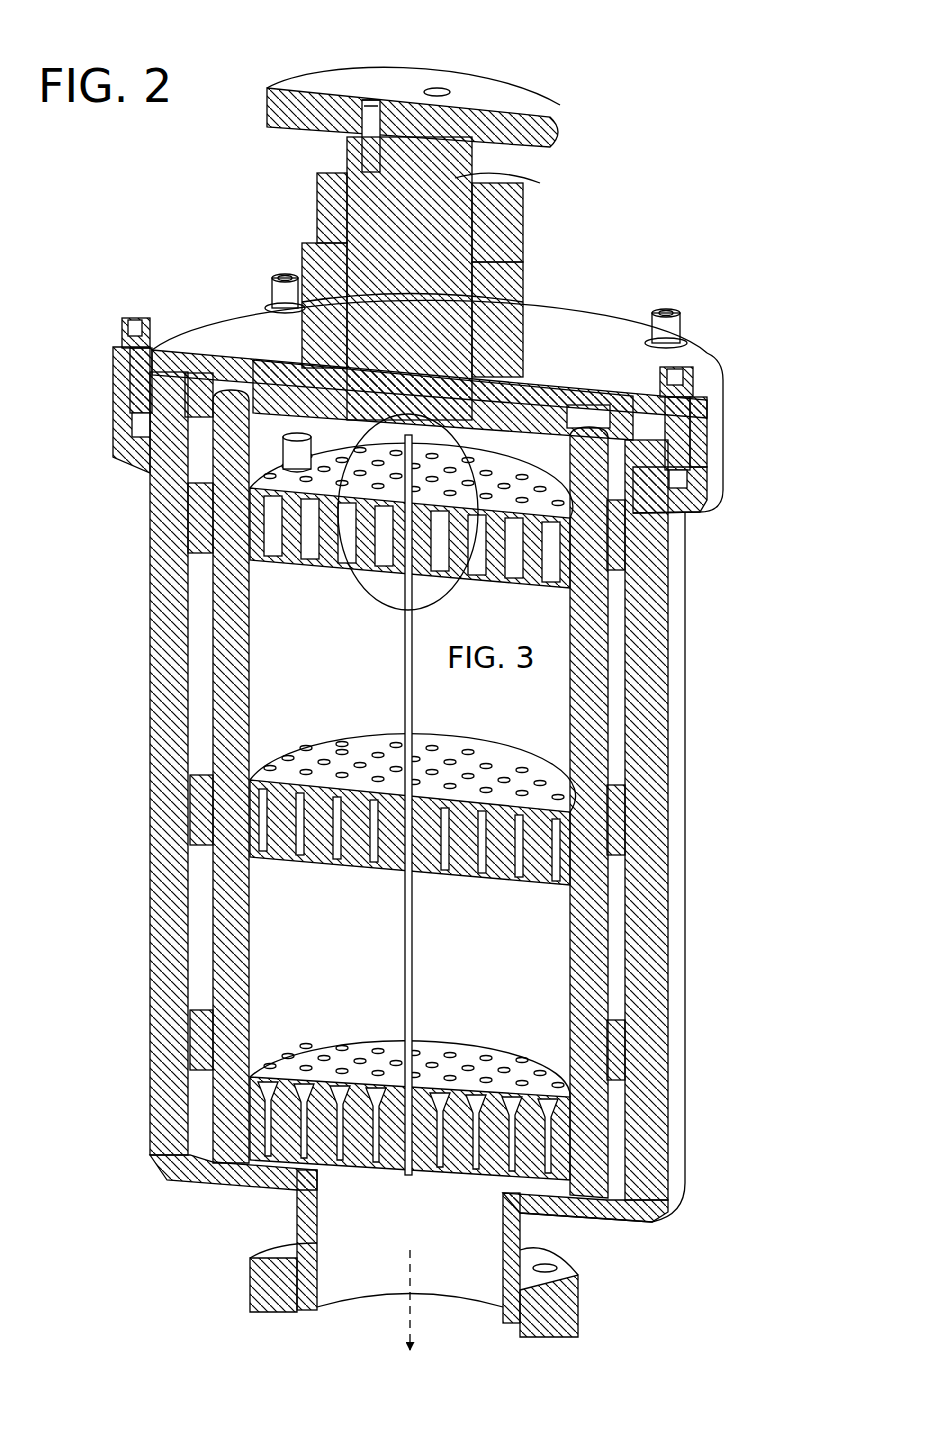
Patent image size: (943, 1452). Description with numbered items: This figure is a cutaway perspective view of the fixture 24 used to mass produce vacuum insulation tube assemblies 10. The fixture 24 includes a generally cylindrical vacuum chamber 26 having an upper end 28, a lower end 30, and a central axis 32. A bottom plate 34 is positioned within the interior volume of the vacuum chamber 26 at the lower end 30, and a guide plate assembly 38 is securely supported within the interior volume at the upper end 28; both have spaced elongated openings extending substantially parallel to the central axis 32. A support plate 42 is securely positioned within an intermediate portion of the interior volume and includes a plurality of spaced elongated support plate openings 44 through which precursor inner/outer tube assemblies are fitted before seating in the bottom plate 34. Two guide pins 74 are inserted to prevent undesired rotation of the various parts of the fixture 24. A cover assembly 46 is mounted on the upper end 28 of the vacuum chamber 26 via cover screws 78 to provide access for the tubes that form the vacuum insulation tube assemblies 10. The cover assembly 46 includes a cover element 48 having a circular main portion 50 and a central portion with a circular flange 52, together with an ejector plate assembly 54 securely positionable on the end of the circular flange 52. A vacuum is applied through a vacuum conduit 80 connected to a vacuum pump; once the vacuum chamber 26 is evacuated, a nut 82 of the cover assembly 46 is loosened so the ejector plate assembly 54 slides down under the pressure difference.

The vacuum insulation tube assembly 10 is at (403, 957).
The fixture 24 is at (722, 740).
The vacuum chamber 26 is at (690, 856).
The upper end 28 is at (125, 437).
The lower end 30 is at (690, 1030).
The central axis 32 is at (415, 1268).
The bottom plate 34 is at (320, 1040).
The guide plate assembly 38 is at (285, 570).
The support plate 42 is at (265, 872).
The support plate openings 44 is at (375, 745).
The cover assembly 46 is at (552, 292).
The cover element 48 is at (705, 370).
The circular main portion 50 is at (605, 312).
The circular flange 52 is at (300, 325).
The ejector plate assembly 54 is at (530, 88).
The guide pins 74 is at (608, 650).
The cover screws 78 is at (285, 300).
The vacuum conduit 80 is at (358, 1258).
The nut 82 is at (512, 214).